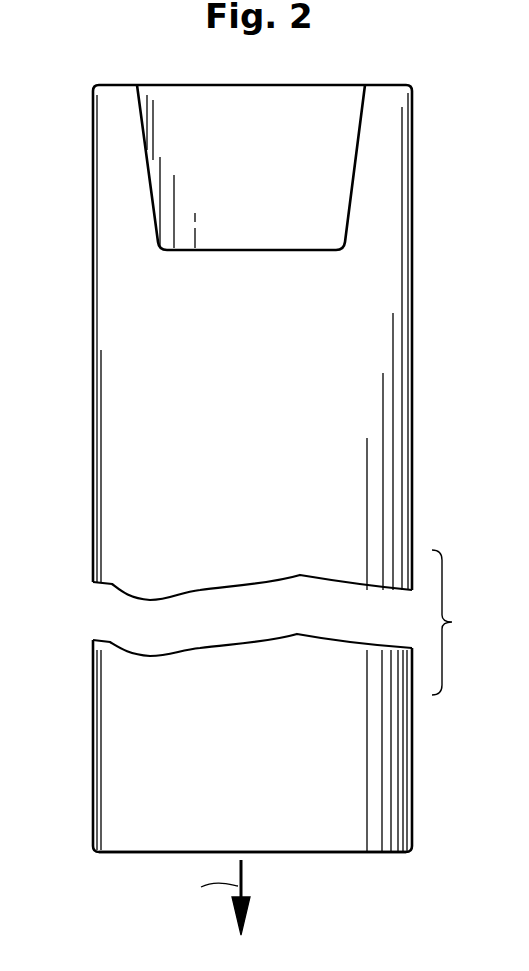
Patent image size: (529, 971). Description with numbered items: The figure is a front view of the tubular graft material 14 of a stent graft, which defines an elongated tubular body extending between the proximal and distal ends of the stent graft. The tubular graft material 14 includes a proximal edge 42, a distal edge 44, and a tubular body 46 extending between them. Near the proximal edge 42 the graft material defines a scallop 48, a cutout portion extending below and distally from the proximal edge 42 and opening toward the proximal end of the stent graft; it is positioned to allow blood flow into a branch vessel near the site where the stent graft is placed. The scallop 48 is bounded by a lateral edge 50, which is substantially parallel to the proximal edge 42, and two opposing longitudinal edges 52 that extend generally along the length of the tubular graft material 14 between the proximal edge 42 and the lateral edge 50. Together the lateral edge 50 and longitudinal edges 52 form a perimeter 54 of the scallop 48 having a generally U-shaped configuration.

The tubular graft material 14 is at (267, 491).
The proximal edge 42 is at (390, 83).
The distal edge 44 is at (320, 855).
The tubular body 46 is at (352, 748).
The scallop 48 is at (204, 165).
The lateral edge 50 is at (240, 253).
The longitudinal edges 52 is at (147, 162).
The perimeter 54 is at (348, 148).